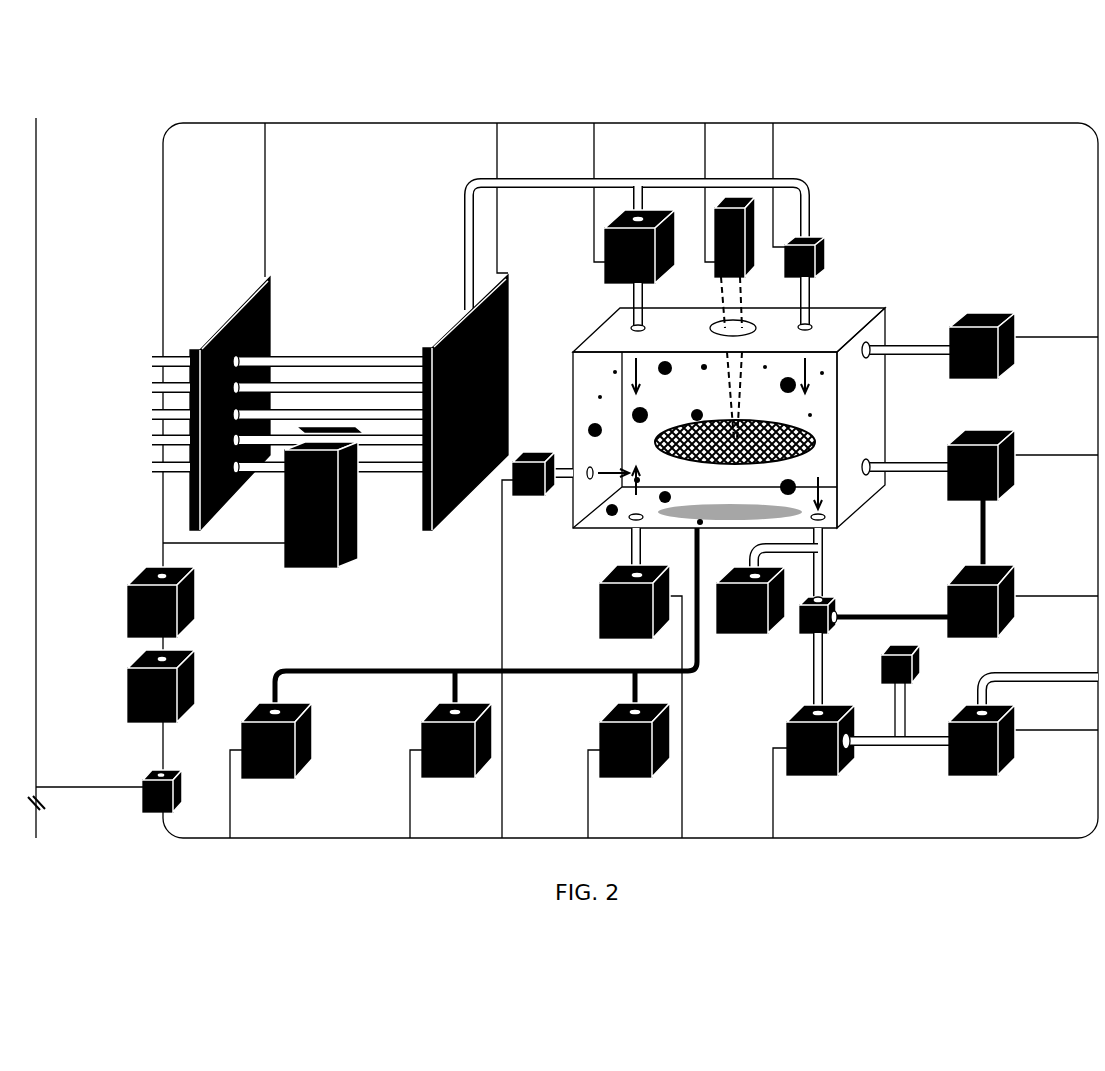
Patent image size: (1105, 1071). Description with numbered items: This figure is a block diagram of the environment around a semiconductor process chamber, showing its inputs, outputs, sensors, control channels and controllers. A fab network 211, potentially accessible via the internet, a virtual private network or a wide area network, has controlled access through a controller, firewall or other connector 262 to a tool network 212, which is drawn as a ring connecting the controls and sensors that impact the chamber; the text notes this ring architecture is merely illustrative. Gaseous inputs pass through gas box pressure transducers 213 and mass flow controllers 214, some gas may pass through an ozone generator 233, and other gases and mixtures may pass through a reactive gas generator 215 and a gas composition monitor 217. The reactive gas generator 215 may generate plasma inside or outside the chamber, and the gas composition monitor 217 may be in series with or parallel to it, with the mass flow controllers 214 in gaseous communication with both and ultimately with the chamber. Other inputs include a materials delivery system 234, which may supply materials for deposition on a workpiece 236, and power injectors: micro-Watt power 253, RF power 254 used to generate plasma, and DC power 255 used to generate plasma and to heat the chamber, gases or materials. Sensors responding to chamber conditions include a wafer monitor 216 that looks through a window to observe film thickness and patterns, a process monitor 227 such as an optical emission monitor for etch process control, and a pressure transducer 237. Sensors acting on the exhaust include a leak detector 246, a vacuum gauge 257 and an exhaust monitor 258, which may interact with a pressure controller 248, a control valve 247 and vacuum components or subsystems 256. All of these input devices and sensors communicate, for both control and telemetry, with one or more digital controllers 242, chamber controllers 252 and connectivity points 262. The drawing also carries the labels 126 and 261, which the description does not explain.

The fab network 211 is at (38, 178).
The tool network 212 is at (166, 150).
The gas box pressure transducers 213 is at (270, 233).
The mass flow controllers 214 is at (505, 233).
The reactive gas generator 215 is at (605, 270).
The wafer monitor 216 is at (757, 163).
The gas composition monitor 217 is at (818, 187).
The wafer 126 is at (735, 290).
The process monitor 227 is at (1020, 287).
The ozone generator 233 is at (358, 500).
The materials delivery system 234 is at (538, 421).
The workpiece 236 is at (812, 402).
The pressure transducer 237 is at (1020, 422).
The digital controllers 242 is at (198, 585).
The leak detector 246 is at (610, 640).
The control valve 247 is at (838, 638).
The pressure controller 248 is at (1010, 635).
The chamber controllers 252 is at (198, 670).
The micro-Watt power injector 253 is at (318, 722).
The RF power injector 254 is at (497, 722).
The DC power injector 255 is at (676, 722).
The vacuum components and/or subsystems 256 is at (850, 775).
The vacuum gauge 257 is at (905, 688).
The exhaust monitor 258 is at (1010, 775).
The internet (e-diagnostics) connection 261 is at (38, 833).
The connector 262 is at (170, 770).